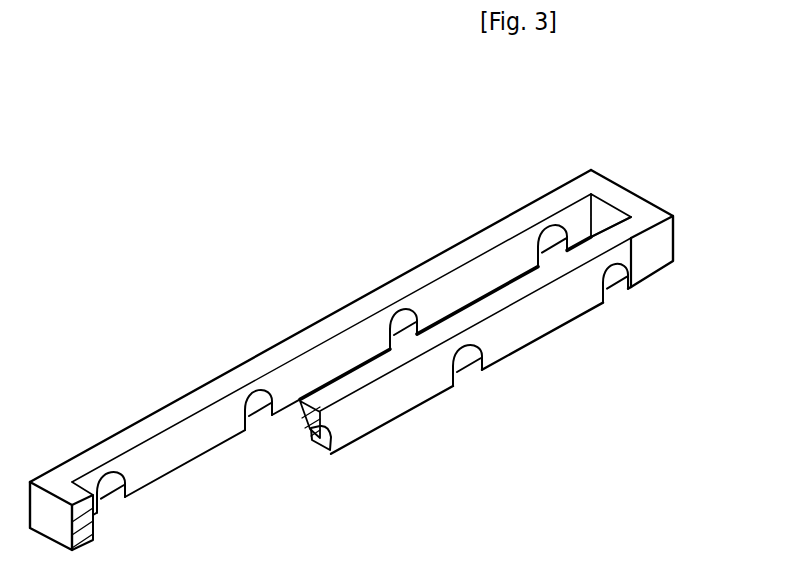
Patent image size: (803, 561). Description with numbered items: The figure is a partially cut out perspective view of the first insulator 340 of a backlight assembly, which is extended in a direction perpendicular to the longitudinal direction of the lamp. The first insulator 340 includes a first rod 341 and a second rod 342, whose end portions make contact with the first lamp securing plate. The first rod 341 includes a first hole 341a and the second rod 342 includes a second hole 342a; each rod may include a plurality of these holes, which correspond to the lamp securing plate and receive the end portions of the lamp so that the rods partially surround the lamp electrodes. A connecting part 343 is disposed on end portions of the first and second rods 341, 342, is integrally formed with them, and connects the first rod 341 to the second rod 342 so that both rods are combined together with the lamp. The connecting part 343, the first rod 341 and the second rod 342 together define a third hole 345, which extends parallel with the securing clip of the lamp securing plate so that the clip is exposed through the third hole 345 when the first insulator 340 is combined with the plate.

The first insulator 340 is at (295, 77).
The first rod 341 is at (387, 395).
The first hole 341a is at (612, 285).
The second rod 342 is at (165, 418).
The second hole 342a is at (257, 422).
The connecting part 343 is at (623, 197).
The third hole 345 is at (505, 273).